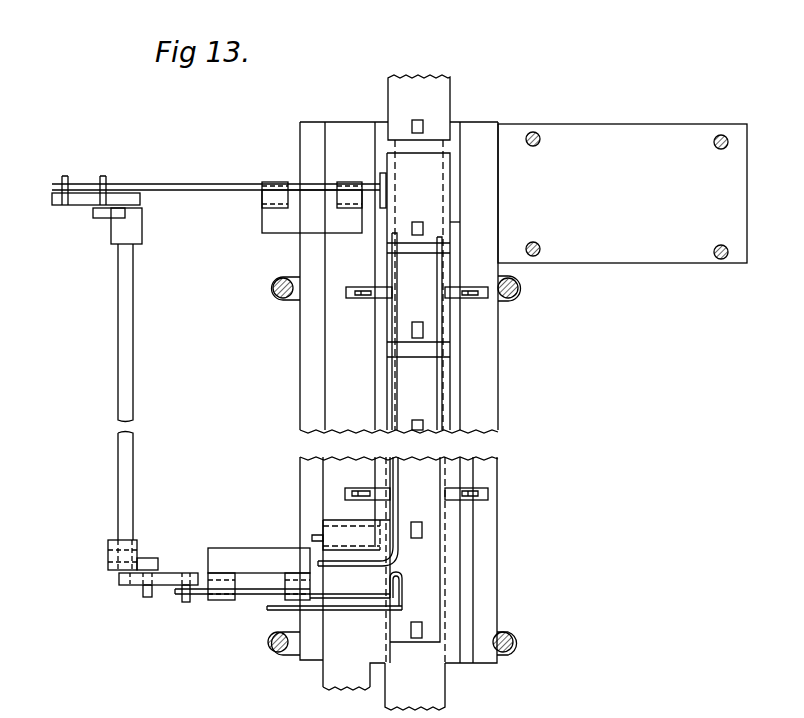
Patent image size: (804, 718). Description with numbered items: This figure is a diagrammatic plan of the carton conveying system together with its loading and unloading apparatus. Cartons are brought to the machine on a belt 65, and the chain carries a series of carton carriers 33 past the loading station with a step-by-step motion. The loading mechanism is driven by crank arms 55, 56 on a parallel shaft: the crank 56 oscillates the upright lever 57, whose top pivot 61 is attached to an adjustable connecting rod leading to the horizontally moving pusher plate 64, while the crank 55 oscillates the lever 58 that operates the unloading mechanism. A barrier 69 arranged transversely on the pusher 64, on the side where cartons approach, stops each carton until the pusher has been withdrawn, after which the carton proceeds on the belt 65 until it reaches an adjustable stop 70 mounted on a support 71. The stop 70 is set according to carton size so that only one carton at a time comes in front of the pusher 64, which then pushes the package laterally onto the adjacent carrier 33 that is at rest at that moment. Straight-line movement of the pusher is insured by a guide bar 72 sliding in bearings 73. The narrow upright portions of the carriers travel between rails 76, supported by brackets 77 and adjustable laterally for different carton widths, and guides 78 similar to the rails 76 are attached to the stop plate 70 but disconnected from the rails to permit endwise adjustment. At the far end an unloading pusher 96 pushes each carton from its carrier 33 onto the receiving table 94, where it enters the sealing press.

The carton carrier 33 is at (414, 622).
The crank arm 55 is at (103, 218).
The crank arm 56 is at (145, 561).
The upright lever 57 is at (170, 587).
The lever 58 is at (80, 207).
The top pivot 61 is at (186, 602).
The pusher plate 64 is at (390, 573).
The belt 65 is at (362, 612).
The barrier 69 is at (345, 612).
The adjustable stop 70 is at (357, 566).
The support 71 is at (345, 491).
The guide bar 72 is at (256, 590).
The bearings 73 is at (216, 596).
The rails 76 is at (440, 392).
The brackets 77 is at (452, 488).
The guides 78 is at (390, 521).
The receiving table 94 is at (600, 143).
The unloading pusher 96 is at (380, 173).